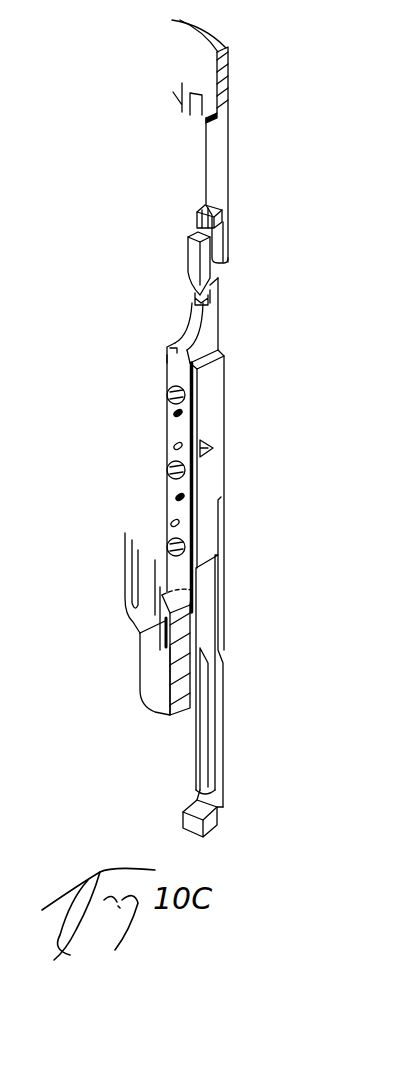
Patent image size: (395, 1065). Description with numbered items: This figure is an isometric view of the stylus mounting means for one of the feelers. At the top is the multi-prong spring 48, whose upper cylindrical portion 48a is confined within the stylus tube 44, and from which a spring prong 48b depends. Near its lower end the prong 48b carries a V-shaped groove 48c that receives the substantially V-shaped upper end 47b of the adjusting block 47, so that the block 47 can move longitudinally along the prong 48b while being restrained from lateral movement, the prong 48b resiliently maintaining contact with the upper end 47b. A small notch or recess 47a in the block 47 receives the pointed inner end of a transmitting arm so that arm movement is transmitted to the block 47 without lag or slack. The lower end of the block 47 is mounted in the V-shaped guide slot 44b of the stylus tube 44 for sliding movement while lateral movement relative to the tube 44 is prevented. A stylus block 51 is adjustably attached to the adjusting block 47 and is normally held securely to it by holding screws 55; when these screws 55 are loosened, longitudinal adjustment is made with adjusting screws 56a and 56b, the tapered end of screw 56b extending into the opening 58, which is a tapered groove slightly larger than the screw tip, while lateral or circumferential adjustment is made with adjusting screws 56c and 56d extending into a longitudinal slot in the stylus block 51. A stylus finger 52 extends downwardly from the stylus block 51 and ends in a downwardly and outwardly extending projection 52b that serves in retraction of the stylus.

The stylus tube 44 is at (148, 690).
The V-shaped guide slot 44b is at (181, 613).
The adjusting block 47 is at (212, 328).
The notch or recess 47a is at (196, 302).
The upper V-shaped end 47b is at (191, 257).
The multi-prong spring 48 is at (227, 93).
The upper cylindrical portion 48a is at (196, 57).
The spring prong 48b is at (216, 183).
The V-shaped groove 48c is at (198, 224).
The stylus block 51 is at (214, 401).
The stylus finger 52 is at (218, 758).
The downwardly and outwardly extending projection 52b is at (183, 820).
The holding screws 55 is at (166, 394).
The longitudinal adjusting screw 56a is at (176, 413).
The longitudinal adjusting screw 56b is at (176, 447).
The lateral adjusting screw 56c is at (178, 497).
The lateral adjusting screw 56d is at (173, 522).
The opening 58 is at (204, 455).